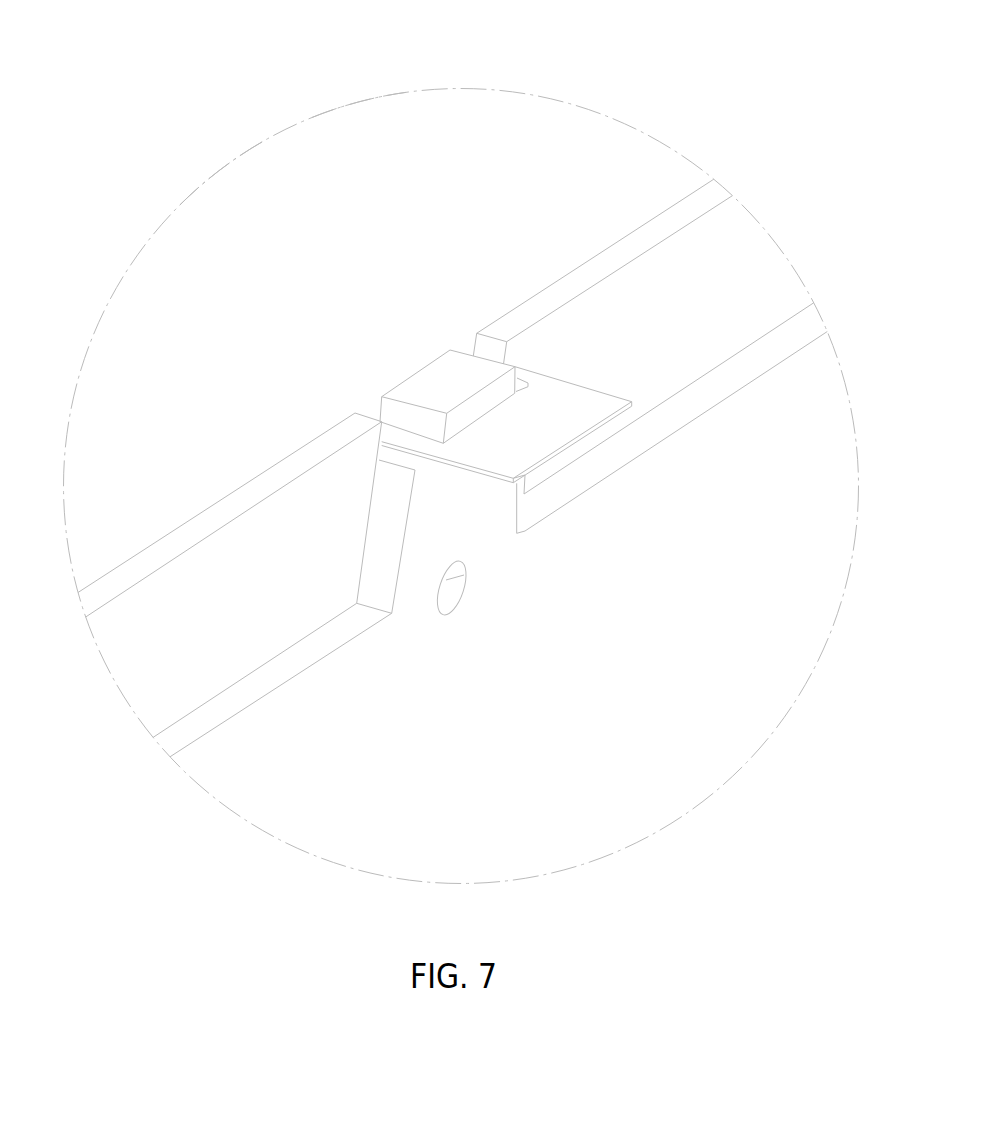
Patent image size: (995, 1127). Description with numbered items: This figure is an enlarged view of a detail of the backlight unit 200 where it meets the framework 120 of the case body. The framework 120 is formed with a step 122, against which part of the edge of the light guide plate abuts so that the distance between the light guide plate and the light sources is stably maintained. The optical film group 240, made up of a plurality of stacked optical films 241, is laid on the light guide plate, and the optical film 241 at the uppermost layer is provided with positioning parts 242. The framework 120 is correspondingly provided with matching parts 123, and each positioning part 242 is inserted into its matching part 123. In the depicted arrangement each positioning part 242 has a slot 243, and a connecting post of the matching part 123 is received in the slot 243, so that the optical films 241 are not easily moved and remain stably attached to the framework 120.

The framework 120 is at (302, 805).
The step 122 is at (420, 523).
The matching part 123 is at (443, 373).
The backlight unit 200 is at (138, 262).
The optical film group 240 is at (222, 183).
The optical film 241 is at (350, 121).
The positioning part 242 is at (572, 397).
The slot 243 is at (519, 378).